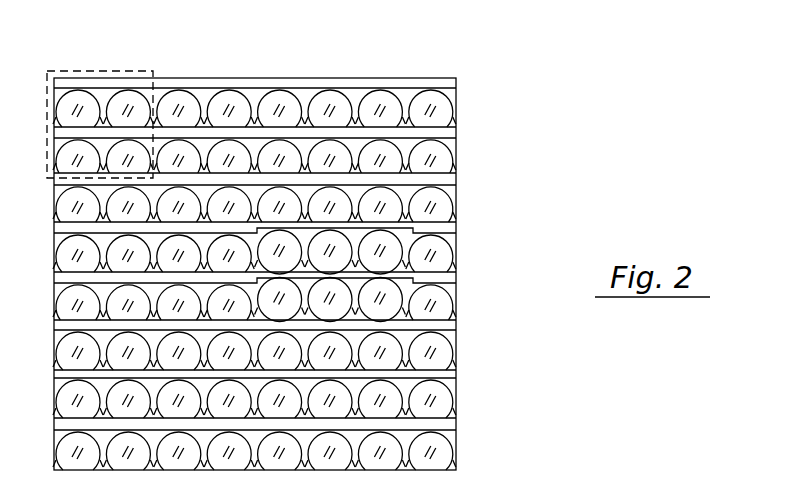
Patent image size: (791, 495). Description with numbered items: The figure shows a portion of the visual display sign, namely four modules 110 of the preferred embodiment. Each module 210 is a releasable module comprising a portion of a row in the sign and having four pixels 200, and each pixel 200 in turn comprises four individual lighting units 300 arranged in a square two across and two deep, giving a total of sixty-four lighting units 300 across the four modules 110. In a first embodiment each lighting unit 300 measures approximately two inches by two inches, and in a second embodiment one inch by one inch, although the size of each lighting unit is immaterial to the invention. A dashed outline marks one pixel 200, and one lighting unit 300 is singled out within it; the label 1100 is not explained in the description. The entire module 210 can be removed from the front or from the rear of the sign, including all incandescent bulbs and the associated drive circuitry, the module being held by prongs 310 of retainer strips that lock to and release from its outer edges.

The module 110 is at (357, 78).
The pixel 200 is at (90, 70).
The lighting unit 300 is at (137, 103).
The cell opening 1100 is at (421, 172).
The prong 310 is at (386, 276).
The releasable module 210 is at (462, 373).